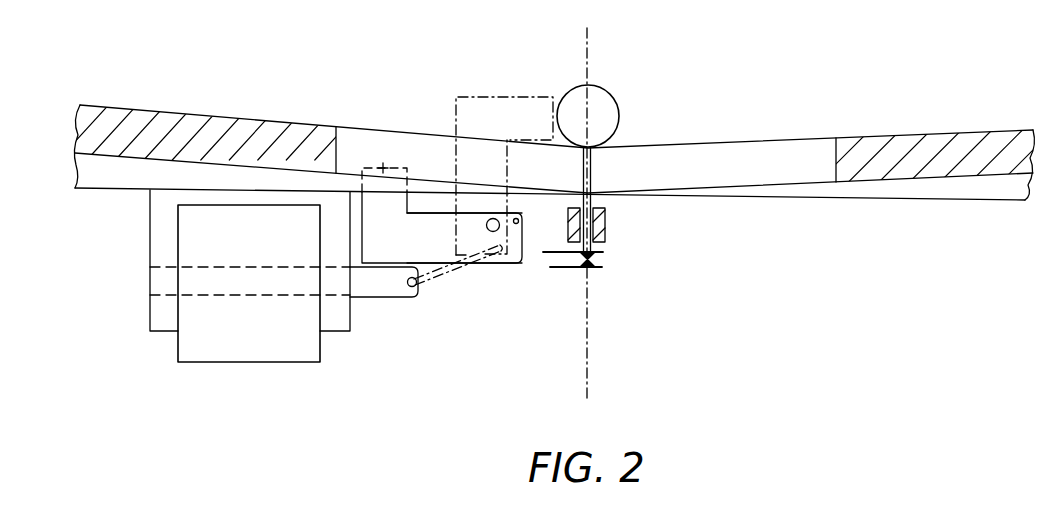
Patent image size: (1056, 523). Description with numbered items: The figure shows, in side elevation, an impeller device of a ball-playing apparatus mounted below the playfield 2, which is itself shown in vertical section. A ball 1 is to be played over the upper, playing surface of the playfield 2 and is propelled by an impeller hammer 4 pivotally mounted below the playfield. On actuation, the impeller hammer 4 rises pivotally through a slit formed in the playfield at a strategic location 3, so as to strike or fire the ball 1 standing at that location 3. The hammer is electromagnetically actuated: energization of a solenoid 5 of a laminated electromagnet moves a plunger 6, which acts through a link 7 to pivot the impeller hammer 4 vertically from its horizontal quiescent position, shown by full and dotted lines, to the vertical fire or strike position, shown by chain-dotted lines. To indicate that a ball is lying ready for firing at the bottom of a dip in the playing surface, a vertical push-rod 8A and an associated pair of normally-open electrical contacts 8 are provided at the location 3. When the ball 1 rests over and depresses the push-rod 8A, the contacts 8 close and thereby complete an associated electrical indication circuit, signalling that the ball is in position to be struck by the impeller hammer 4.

The ball 1 is at (620, 123).
The playfield 2 is at (913, 142).
The location 3 is at (630, 90).
The impeller hammer 4 is at (455, 106).
The solenoid 5 is at (245, 352).
The plunger 6 is at (387, 298).
The link 7 is at (453, 265).
The electrical contacts 8 is at (600, 268).
The push-rod 8A is at (595, 200).